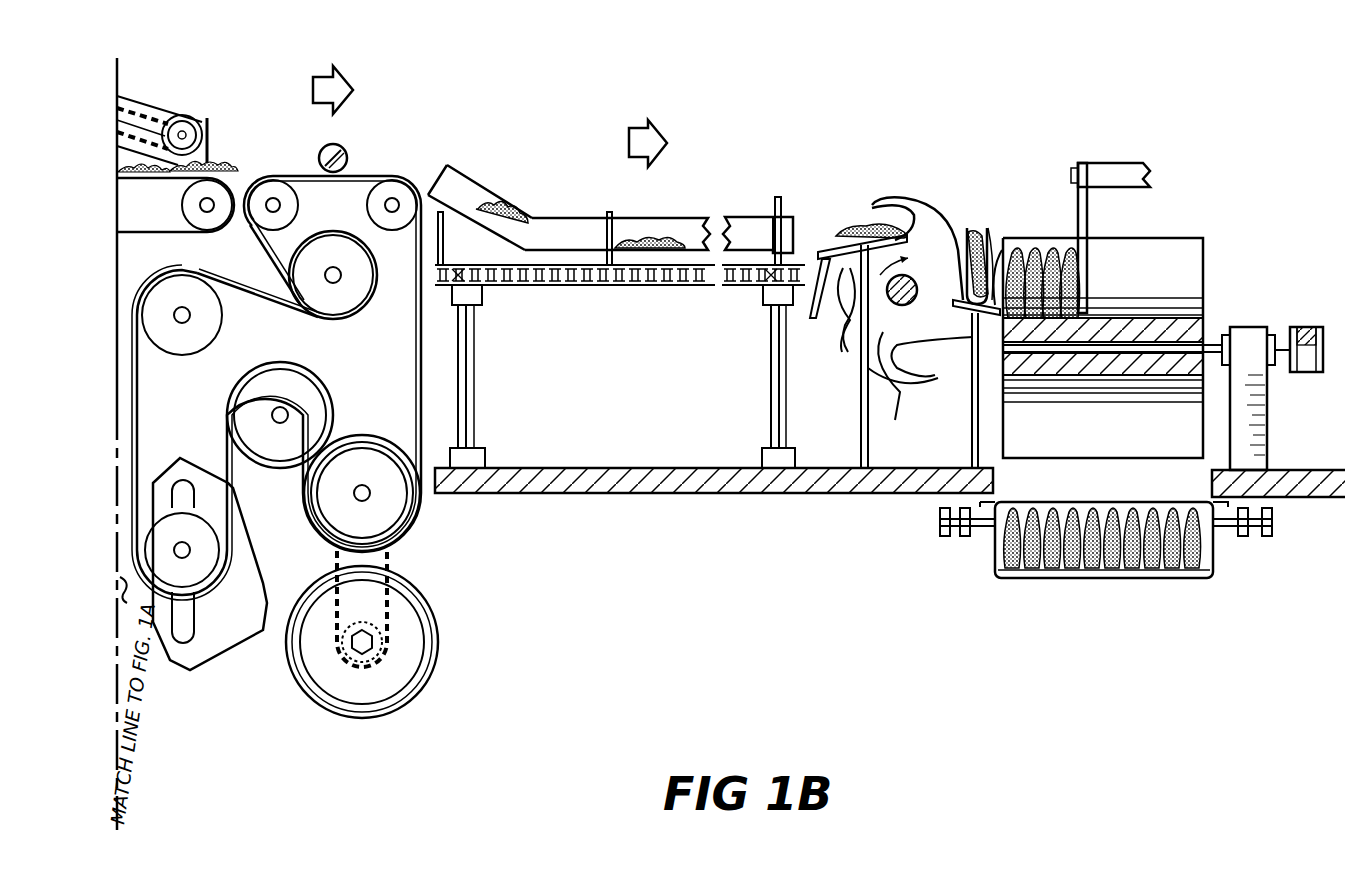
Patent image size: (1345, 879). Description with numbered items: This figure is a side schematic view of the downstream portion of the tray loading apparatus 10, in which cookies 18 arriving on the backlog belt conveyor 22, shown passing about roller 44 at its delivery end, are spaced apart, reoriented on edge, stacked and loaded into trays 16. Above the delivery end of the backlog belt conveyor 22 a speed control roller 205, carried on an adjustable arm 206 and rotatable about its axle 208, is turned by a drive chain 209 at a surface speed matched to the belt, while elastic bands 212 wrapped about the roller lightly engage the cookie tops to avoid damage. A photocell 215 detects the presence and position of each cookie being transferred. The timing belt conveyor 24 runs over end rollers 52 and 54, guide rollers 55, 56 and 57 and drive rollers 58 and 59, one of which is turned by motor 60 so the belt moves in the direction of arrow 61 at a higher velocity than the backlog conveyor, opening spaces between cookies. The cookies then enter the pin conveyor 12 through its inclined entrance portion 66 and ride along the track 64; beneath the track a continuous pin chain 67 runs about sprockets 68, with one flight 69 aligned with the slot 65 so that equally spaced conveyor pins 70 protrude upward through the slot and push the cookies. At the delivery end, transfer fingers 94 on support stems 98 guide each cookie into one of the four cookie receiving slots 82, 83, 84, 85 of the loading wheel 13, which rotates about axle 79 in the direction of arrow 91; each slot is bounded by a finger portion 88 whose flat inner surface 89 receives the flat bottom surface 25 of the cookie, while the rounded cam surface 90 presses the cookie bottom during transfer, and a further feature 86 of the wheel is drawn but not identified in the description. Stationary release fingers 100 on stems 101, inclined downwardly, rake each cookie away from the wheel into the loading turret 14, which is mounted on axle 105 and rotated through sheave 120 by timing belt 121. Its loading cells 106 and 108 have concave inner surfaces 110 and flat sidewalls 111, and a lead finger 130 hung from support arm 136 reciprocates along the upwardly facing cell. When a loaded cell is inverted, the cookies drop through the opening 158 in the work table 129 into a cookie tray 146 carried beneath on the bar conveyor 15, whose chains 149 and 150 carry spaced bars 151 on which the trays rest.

The tray loading apparatus 10 is at (662, 68).
The pin conveyor 12 is at (578, 137).
The loading wheel 13 is at (918, 180).
The loading turret 14 is at (1188, 222).
The bar conveyor 15 is at (958, 548).
The cookie trays 16 is at (1178, 580).
The cookies 18 is at (500, 215).
The backlog belt conveyor 22 is at (158, 232).
The timing belt conveyor 24 is at (358, 180).
The bottom surface 25 is at (822, 252).
The pulley 44 is at (188, 210).
The end roller 52 is at (288, 196).
The end roller 54 is at (385, 222).
The guide roller 55 is at (298, 274).
The guide roller 56 is at (212, 324).
The guide roller 57 is at (200, 576).
The drive roller 58 is at (285, 448).
The drive roller 59 is at (360, 458).
The motor 60 is at (402, 612).
The arrow 61 is at (320, 82).
The track 64 is at (558, 220).
The slot 65 is at (712, 260).
The entrance portion 66 is at (448, 177).
The pin chain 67 is at (548, 290).
The sprockets 68 is at (478, 290).
The flight 69 is at (615, 288).
The conveyor pins 70 is at (443, 228).
The axle 79 is at (903, 305).
The cookie receiving slot 82 is at (832, 322).
The cookie receiving slot 83 is at (935, 355).
The cookie receiving slot 84 is at (992, 240).
The cookie receiving slot 85 is at (868, 200).
The guide 86 is at (893, 418).
The finger portion 88 is at (876, 206).
The inner surface 89 is at (858, 205).
The rounded cam surface 90 is at (922, 205).
The arrow 91 is at (902, 270).
The transfer finger 94 is at (814, 305).
The support stem 98 is at (860, 388).
The release finger 100 is at (968, 290).
The stem 101 is at (972, 425).
The axle 105 is at (1212, 340).
The loading cell 106 is at (1190, 262).
The loading cell 108 is at (1108, 430).
The concave inner surface 110 is at (1180, 312).
The sidewalls 111 is at (1125, 240).
The sheave 120 is at (1305, 370).
The timing belt 121 is at (1306, 327).
The work table 129 is at (622, 485).
The lead finger 130 is at (1075, 210).
The support arm 136 is at (1105, 163).
The cookie trays 146 is at (1148, 578).
The conveyor chain 149 is at (1240, 538).
The conveyor chain 150 is at (945, 538).
The bars 151 is at (985, 530).
The opening 158 is at (1190, 488).
The speed control roller 205 is at (195, 124).
The adjustable arm 206 is at (165, 118).
The axle 208 is at (186, 135).
The drive chain 209 is at (130, 108).
The elastic bands 212 is at (210, 150).
The photocell 215 is at (338, 148).